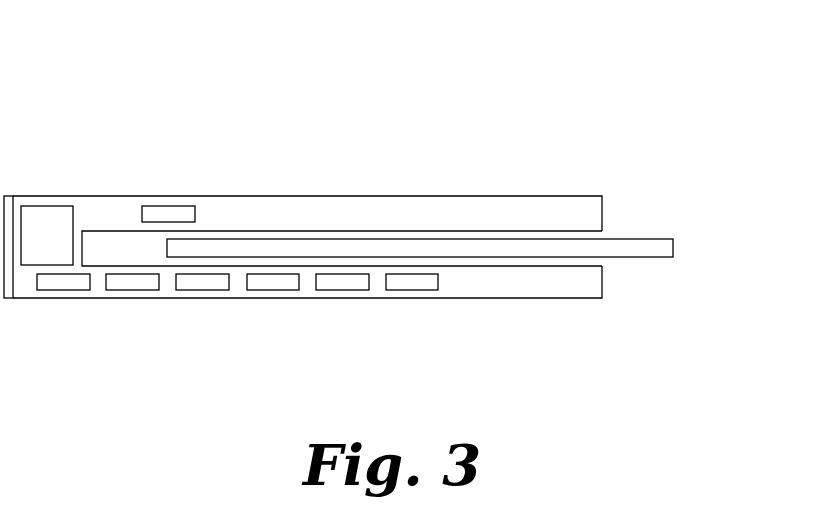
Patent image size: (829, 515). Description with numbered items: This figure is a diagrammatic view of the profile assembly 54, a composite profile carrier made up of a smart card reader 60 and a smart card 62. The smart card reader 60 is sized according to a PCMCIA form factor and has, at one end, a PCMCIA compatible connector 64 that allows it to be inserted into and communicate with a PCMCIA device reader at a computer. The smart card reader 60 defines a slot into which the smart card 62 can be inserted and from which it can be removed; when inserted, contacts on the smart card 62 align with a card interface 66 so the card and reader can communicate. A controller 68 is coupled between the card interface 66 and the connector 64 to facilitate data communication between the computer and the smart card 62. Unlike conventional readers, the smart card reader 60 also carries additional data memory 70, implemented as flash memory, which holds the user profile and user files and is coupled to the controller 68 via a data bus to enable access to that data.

The profile assembly 54 is at (378, 109).
The PCMCIA compatible connector 64 is at (8, 196).
The controller 68 is at (50, 196).
The card interface 66 is at (172, 196).
The smart card reader 60 is at (420, 196).
The smart card 62 is at (657, 239).
The data memory 70 is at (438, 308).